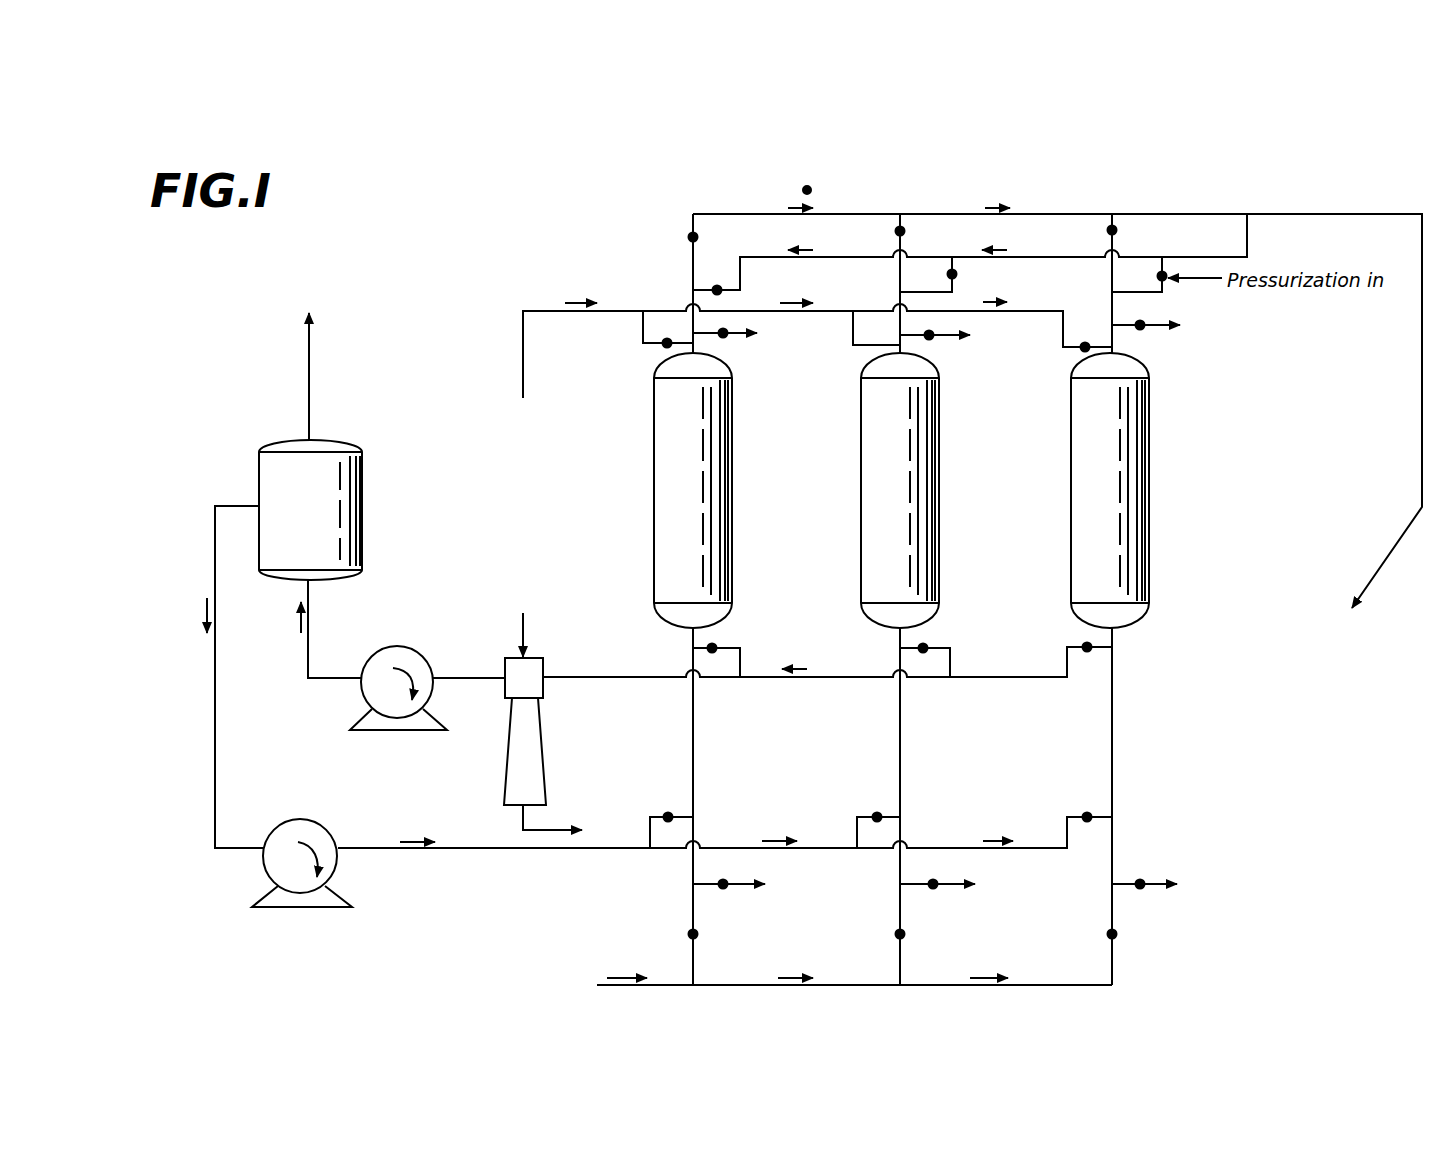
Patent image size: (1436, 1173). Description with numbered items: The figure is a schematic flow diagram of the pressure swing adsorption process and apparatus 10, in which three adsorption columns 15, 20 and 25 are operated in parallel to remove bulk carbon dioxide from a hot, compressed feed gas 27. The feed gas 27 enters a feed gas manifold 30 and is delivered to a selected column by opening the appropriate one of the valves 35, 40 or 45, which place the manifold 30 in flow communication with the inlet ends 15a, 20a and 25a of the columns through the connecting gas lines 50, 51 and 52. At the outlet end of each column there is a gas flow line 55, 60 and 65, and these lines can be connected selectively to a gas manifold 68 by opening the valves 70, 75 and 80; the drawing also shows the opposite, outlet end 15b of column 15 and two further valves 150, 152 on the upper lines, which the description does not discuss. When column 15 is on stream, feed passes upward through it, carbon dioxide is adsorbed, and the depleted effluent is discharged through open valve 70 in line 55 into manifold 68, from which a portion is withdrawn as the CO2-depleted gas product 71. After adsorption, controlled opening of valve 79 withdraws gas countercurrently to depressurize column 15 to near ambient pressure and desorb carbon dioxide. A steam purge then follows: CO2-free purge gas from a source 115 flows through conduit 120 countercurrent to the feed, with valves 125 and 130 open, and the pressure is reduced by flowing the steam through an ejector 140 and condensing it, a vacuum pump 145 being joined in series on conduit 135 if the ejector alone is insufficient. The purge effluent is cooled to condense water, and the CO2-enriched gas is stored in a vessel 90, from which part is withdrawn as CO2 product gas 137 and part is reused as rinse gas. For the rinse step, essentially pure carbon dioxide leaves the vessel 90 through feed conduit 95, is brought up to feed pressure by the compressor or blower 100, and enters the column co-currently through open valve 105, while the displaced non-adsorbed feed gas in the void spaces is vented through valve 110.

The process and apparatus 10 is at (633, 290).
The adsorption column 15 is at (693, 490).
The inlet end of column 15 15a is at (692, 630).
The top end of bed 15 15b is at (697, 353).
The adsorption column 20 is at (900, 490).
The inlet end of column 20 20a is at (905, 630).
The adsorption column 25 is at (1110, 490).
The inlet end of column 25 25a is at (1113, 630).
The feed gas 27 is at (437, 985).
The feed gas manifold 30 is at (660, 985).
The valve 35 is at (690, 934).
The valve 40 is at (900, 934).
The valve 45 is at (1112, 934).
The connecting gas line 50 is at (693, 702).
The connecting gas line 51 is at (899, 702).
The connecting gas line 52 is at (1113, 697).
The gas flow line 55 is at (693, 273).
The gas flow line 60 is at (897, 267).
The gas flow line 65 is at (1112, 337).
The gas manifold 68 is at (1020, 214).
The valve 70 is at (693, 237).
The CO2-depleted gas product 71 is at (1310, 682).
The valve 75 is at (899, 231).
The valve 79 is at (723, 884).
The valve 80 is at (1112, 230).
The vessel 90 is at (363, 525).
The feed conduit 95 is at (215, 665).
The compressor or blower 100 is at (332, 856).
The valve 105 is at (668, 817).
The valve 110 is at (723, 337).
The source 115 is at (478, 455).
The conduit 120 is at (523, 360).
The valve 125 is at (667, 343).
The valve 130 is at (713, 647).
The conduit 135 is at (557, 673).
The CO2 product gas 137 is at (312, 258).
The ejector 140 is at (547, 683).
The vacuum pump 145 is at (400, 655).
The pressurization valve for bed 15 150 is at (717, 290).
The pressurization valve for bed 20 152 is at (952, 274).